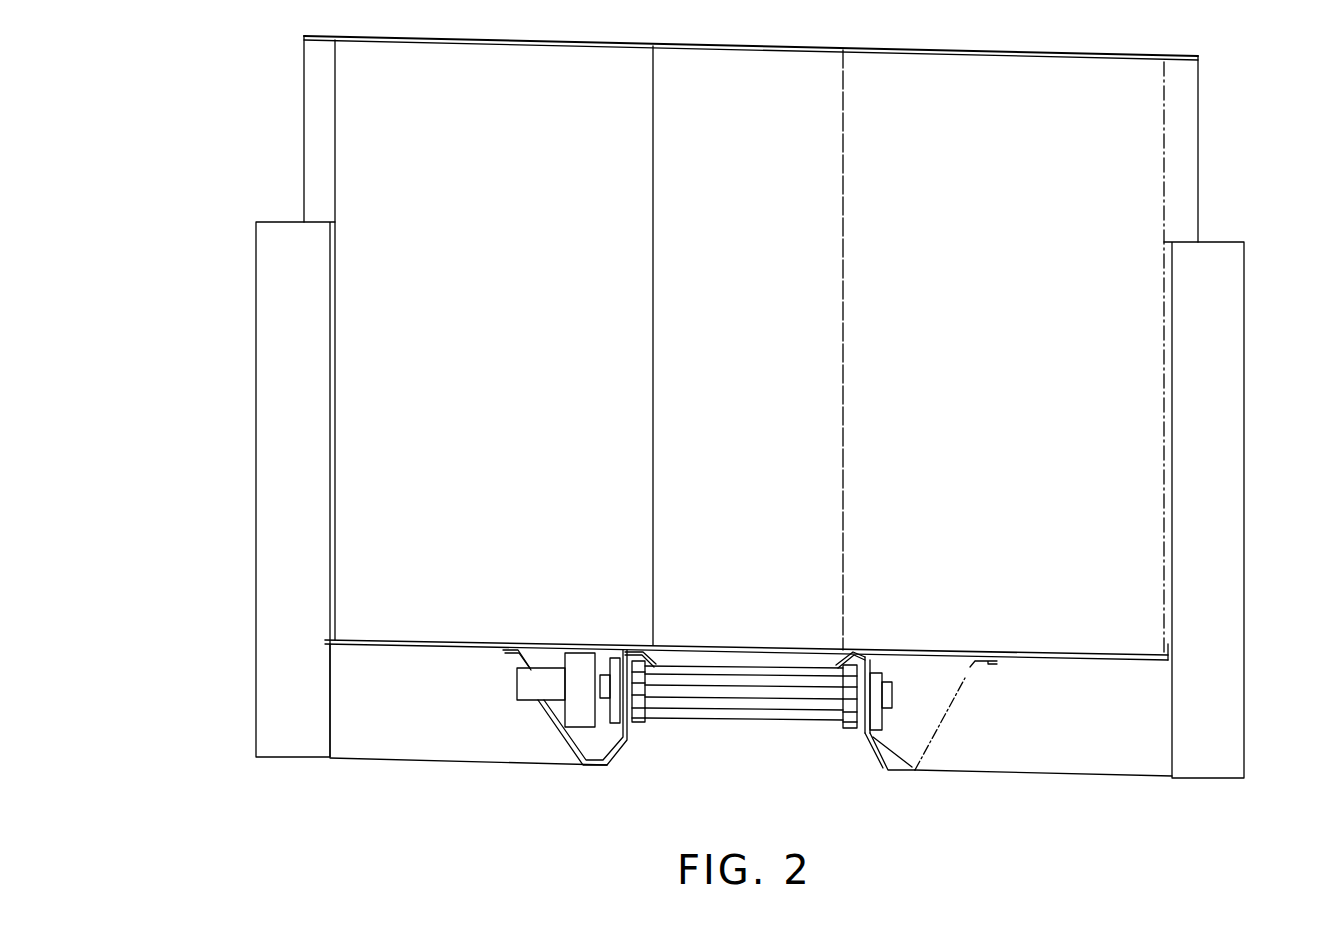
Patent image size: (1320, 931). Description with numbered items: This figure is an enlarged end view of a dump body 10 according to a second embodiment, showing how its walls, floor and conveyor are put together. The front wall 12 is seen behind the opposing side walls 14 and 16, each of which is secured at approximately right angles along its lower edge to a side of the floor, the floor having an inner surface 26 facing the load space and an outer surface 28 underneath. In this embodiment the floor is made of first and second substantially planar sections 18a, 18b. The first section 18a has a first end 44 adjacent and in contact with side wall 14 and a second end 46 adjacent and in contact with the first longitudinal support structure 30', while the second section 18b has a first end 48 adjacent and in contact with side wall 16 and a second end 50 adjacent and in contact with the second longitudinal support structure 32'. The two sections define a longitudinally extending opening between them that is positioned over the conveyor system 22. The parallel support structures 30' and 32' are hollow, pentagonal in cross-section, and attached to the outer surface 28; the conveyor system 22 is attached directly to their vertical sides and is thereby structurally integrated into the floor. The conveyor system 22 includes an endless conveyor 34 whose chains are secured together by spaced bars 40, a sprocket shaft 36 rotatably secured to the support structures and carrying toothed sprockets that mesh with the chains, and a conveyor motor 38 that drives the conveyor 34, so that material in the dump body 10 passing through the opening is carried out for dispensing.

The dump body 10 is at (250, 160).
The front wall 12 is at (771, 263).
The side wall 14 is at (278, 352).
The side wall 16 is at (1232, 365).
The first substantially planar section 18a is at (460, 647).
The second substantially planar section 18b is at (1047, 657).
The conveyor system 22 is at (744, 718).
The inner surface 26 is at (395, 638).
The outer surface 28 is at (362, 645).
The first longitudinal support structure 30' is at (579, 742).
The second longitudinal support structure 32' is at (891, 756).
The endless conveyor 34 is at (703, 715).
The sprocket shaft 36 is at (864, 700).
The conveyor motor 38 is at (578, 715).
The bars 40 is at (723, 670).
The first end 44 is at (337, 647).
The second end 46 is at (645, 646).
The first end 48 is at (1158, 652).
The second end 50 is at (857, 648).